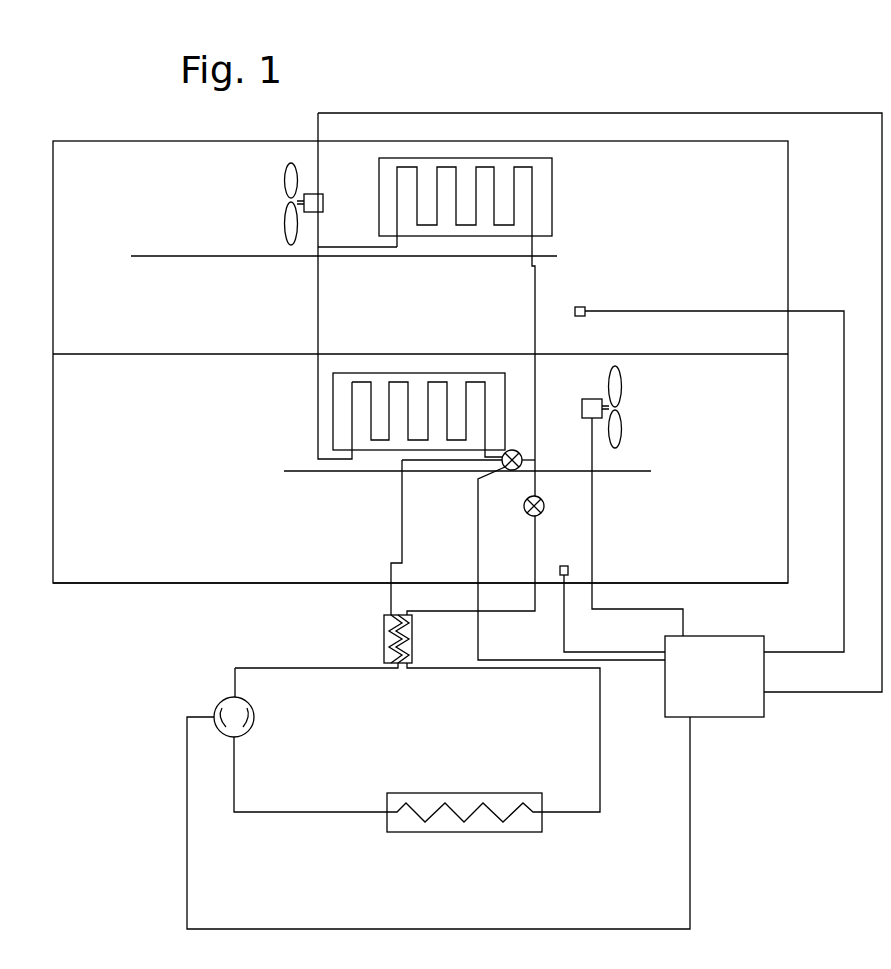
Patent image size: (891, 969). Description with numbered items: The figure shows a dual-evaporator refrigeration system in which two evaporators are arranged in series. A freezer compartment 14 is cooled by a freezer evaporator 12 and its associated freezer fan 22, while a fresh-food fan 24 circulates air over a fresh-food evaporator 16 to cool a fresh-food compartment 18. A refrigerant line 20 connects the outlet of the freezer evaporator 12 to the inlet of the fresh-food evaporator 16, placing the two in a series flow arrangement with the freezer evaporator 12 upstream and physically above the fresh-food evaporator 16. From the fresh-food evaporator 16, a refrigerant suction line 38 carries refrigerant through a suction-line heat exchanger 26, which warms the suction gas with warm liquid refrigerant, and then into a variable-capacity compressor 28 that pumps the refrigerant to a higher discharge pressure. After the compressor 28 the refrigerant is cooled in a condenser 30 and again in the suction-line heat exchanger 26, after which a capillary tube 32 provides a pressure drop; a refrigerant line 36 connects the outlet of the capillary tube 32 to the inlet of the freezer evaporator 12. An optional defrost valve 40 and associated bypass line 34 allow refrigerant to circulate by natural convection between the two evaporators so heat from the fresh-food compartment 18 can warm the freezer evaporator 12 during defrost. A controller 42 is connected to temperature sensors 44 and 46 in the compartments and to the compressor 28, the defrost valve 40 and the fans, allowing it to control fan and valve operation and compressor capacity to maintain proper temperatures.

The freezer evaporator 12 is at (387, 202).
The freezer compartment 14 is at (475, 345).
The fresh-food evaporator 16 is at (495, 403).
The fresh-food compartment 18 is at (363, 538).
The refrigerant line 20 is at (318, 327).
The freezer fan 22 is at (290, 217).
The fresh-food fan 24 is at (620, 427).
The suction-line heat exchanger 26 is at (385, 637).
The variable-capacity compressor 28 is at (253, 720).
The condenser 30 is at (482, 825).
The capillary tube 32 is at (523, 504).
The bypass line 34 is at (535, 460).
The refrigerant line 36 is at (535, 472).
The refrigerant suction line 38 is at (305, 665).
The defrost valve 40 is at (514, 451).
The controller 42 is at (714, 676).
The temperature sensor 44 is at (709, 469).
The temperature sensor 46 is at (611, 597).